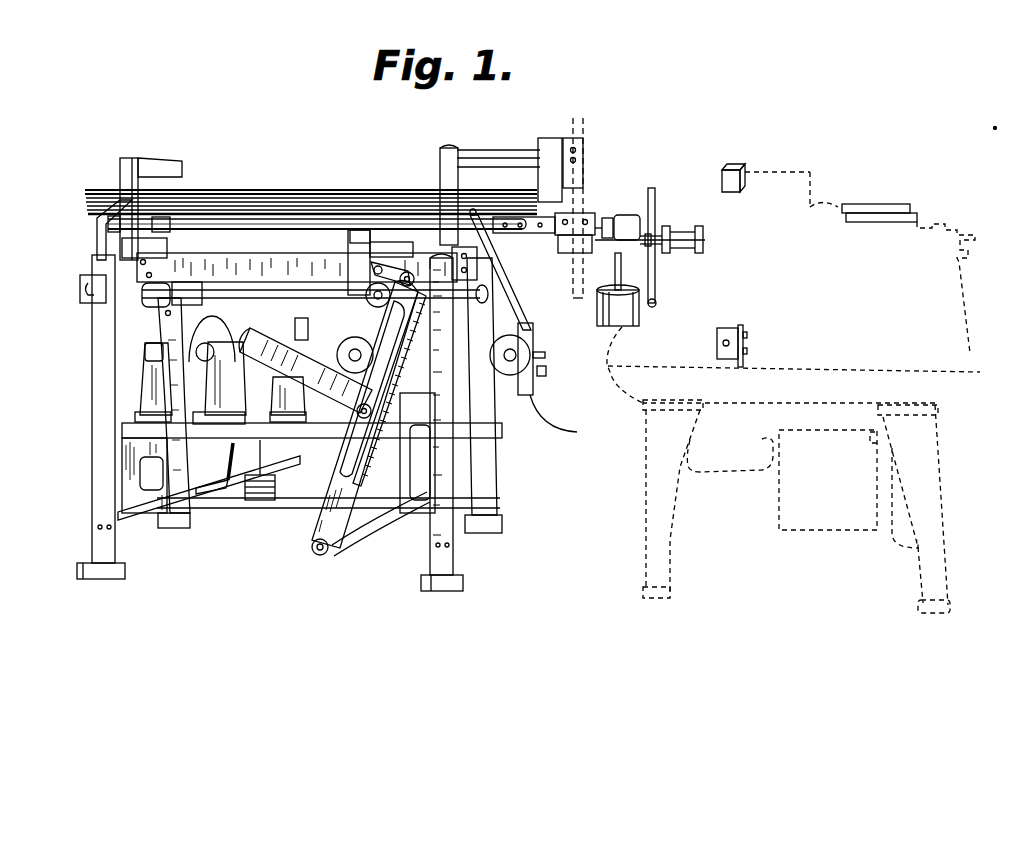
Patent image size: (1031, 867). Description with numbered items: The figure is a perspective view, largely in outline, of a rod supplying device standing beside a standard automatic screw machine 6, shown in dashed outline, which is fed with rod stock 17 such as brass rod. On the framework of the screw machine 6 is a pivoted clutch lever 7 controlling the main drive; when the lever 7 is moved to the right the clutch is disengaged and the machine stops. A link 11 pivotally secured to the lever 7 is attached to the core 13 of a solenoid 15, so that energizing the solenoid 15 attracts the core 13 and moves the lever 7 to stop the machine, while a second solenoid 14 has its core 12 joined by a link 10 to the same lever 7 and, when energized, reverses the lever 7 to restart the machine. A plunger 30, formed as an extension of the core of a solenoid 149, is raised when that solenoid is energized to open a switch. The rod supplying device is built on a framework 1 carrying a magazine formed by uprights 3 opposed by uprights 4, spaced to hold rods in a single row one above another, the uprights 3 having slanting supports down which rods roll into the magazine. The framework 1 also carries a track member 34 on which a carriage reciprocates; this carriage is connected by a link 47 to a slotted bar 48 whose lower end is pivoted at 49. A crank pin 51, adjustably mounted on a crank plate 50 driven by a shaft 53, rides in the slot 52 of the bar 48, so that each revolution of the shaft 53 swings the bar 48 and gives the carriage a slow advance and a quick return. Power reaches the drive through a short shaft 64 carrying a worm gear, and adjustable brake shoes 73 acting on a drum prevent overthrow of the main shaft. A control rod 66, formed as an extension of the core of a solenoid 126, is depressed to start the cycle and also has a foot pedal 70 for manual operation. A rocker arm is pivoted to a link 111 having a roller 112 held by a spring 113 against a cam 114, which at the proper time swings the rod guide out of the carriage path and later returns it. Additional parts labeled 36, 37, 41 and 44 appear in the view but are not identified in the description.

The framework 1 is at (92, 405).
The uprights 3 is at (170, 160).
The uprights 4 is at (448, 152).
The automatic screw machine 6 is at (964, 299).
The clutch lever 7 is at (655, 195).
The link 10 is at (621, 294).
The link 11 is at (665, 230).
The core 12 is at (608, 222).
The core 13 is at (683, 248).
The solenoid 14 is at (560, 256).
The solenoid 15 is at (695, 235).
The rod stock 17 is at (337, 195).
The plunger 30 is at (621, 283).
The track member 34 is at (235, 265).
The bearing bracket 36 is at (368, 243).
The bracket 37 is at (405, 243).
The upright post 41 is at (128, 165).
The shaft 44 is at (246, 300).
The link 47 is at (368, 266).
The slotted bar 48 is at (352, 513).
The pivot 49 is at (320, 556).
The crank plate 50 is at (305, 370).
The crank pin 51 is at (372, 410).
The slot 52 is at (347, 470).
The shaft 53 is at (348, 340).
The short shaft 64 is at (160, 330).
The control rod 66 is at (215, 483).
The foot pedal 70 is at (205, 500).
The adjustable brake shoes 73 is at (301, 318).
The link 111 is at (492, 257).
The roller 112 is at (518, 325).
The spring 113 is at (546, 372).
The cam 114 is at (575, 420).
The solenoid 126 is at (262, 502).
The solenoid 149 is at (623, 327).